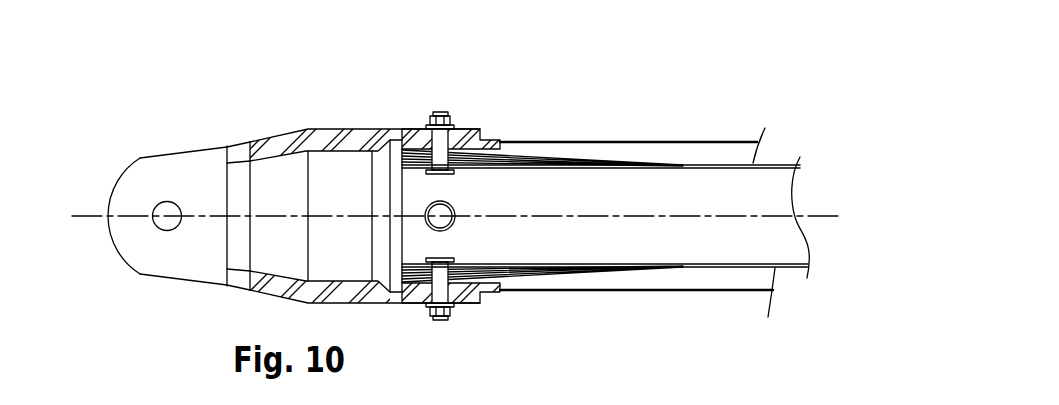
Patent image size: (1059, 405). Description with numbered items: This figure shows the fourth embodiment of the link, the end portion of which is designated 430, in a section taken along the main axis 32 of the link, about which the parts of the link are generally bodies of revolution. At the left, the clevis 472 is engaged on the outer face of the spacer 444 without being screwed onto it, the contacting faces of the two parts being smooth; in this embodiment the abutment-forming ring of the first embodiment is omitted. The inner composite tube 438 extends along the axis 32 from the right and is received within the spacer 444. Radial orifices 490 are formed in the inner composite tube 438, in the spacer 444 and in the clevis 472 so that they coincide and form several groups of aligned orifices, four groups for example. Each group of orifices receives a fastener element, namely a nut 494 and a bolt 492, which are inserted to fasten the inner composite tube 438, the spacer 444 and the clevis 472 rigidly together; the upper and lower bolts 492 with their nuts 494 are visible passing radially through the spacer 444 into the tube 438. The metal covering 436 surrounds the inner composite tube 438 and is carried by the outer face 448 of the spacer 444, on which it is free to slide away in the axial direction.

The main axis 32 is at (88, 218).
The strut assembly 430 is at (609, 89).
The metal covering 436 is at (703, 139).
The inner composite tube 438 is at (757, 190).
The spacer 444 is at (494, 137).
The outer face 448 is at (497, 296).
The clevis 472 is at (195, 175).
The radial orifices 490 is at (450, 207).
The bolt 492 is at (438, 163).
The nut 494 is at (442, 112).